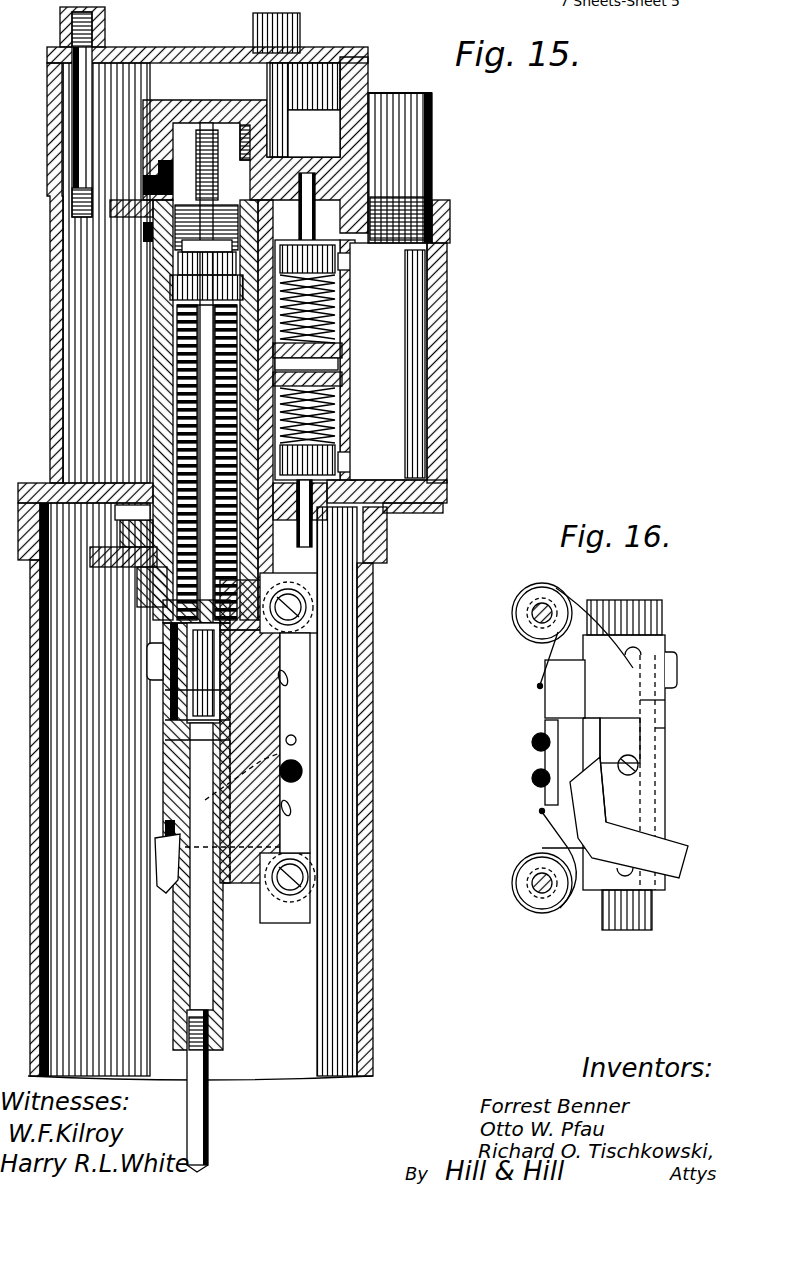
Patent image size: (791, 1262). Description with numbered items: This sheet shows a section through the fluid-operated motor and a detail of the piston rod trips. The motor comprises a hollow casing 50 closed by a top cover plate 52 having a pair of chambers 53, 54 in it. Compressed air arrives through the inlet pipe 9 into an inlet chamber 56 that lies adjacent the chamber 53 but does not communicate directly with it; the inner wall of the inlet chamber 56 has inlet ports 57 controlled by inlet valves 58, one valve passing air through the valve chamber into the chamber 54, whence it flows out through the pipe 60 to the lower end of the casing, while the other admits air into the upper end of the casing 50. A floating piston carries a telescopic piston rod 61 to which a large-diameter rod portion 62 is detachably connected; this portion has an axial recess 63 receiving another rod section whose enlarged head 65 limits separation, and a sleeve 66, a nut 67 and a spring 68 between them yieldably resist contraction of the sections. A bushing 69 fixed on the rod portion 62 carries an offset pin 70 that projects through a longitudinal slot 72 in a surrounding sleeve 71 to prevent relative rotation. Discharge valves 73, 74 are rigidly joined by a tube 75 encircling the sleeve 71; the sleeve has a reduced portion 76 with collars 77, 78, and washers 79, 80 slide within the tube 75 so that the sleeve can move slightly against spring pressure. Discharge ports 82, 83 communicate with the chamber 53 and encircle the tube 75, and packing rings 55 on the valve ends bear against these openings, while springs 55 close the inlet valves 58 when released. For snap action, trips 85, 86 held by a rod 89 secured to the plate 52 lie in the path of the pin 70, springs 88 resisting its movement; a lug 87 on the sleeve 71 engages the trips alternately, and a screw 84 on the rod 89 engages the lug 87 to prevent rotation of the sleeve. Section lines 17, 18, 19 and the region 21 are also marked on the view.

In FIG. 15, the inlet pipe 9 is at (425, 99).
In FIG. 15, the section line 17 is at (458, 205).
In FIG. 15, the section line 18 is at (458, 462).
In FIG. 15, the section line 19 is at (404, 754).
In FIG. 15, the chamber 21 is at (300, 141).
In FIG. 15, the hollow casing 50 is at (372, 825).
In FIG. 15, the top cover plate 52 is at (438, 513).
In FIG. 15, the chamber 53 is at (56, 370).
In FIG. 15, the chamber 54 is at (368, 117).
In FIG. 15, the packing rings 55 is at (172, 185).
In FIG. 15, the inlet chamber 56 is at (410, 377).
In FIG. 15, the inlet port 57 is at (351, 260).
In FIG. 15, the inlet valve 58 is at (317, 180).
In FIG. 15, the pipe 60 is at (180, 406).
In FIG. 15, the piston rod 61 is at (208, 1117).
In FIG. 15, the rod portion 62 is at (190, 926).
In FIG. 16, the rod portion 62 is at (653, 913).
In FIG. 15, the axial recess 63 is at (186, 636).
In FIG. 15, the enlarged head 65 is at (177, 480).
In FIG. 15, the sleeve 66 is at (182, 366).
In FIG. 15, the nut 67 is at (180, 336).
In FIG. 15, the spring 68 is at (177, 462).
In FIG. 15, the bushing 69 is at (166, 736).
In FIG. 15, the offset pin 70 is at (222, 757).
In FIG. 16, the offset pin 70 is at (648, 765).
In FIG. 15, the sleeve 71 is at (166, 699).
In FIG. 16, the sleeve 71 is at (666, 733).
In FIG. 15, the longitudinal slot 72 is at (166, 716).
In FIG. 16, the longitudinal slot 72 is at (641, 713).
In FIG. 15, the discharge valve 73 is at (160, 107).
In FIG. 15, the discharge valve 74 is at (135, 570).
In FIG. 15, the tube 75 is at (176, 262).
In FIG. 15, the reduced portion 76 is at (210, 150).
In FIG. 15, the collar 77 is at (168, 280).
In FIG. 15, the collar 78 is at (245, 127).
In FIG. 15, the washer 79 is at (168, 172).
In FIG. 15, the washer 80 is at (180, 245).
In FIG. 15, the discharge port 82 is at (160, 232).
In FIG. 15, the discharge port 83 is at (175, 222).
In FIG. 15, the screw 84 is at (297, 740).
In FIG. 16, the screw 84 is at (538, 748).
In FIG. 15, the trip 85 is at (178, 890).
In FIG. 16, the trip 85 is at (684, 862).
In FIG. 15, the trip 86 is at (160, 658).
In FIG. 16, the trip 86 is at (678, 669).
In FIG. 15, the lug 87 is at (296, 764).
In FIG. 16, the lug 87 is at (556, 763).
In FIG. 15, the springs 88 is at (287, 676).
In FIG. 16, the springs 88 is at (546, 668).
In FIG. 15, the rod 89 is at (292, 690).